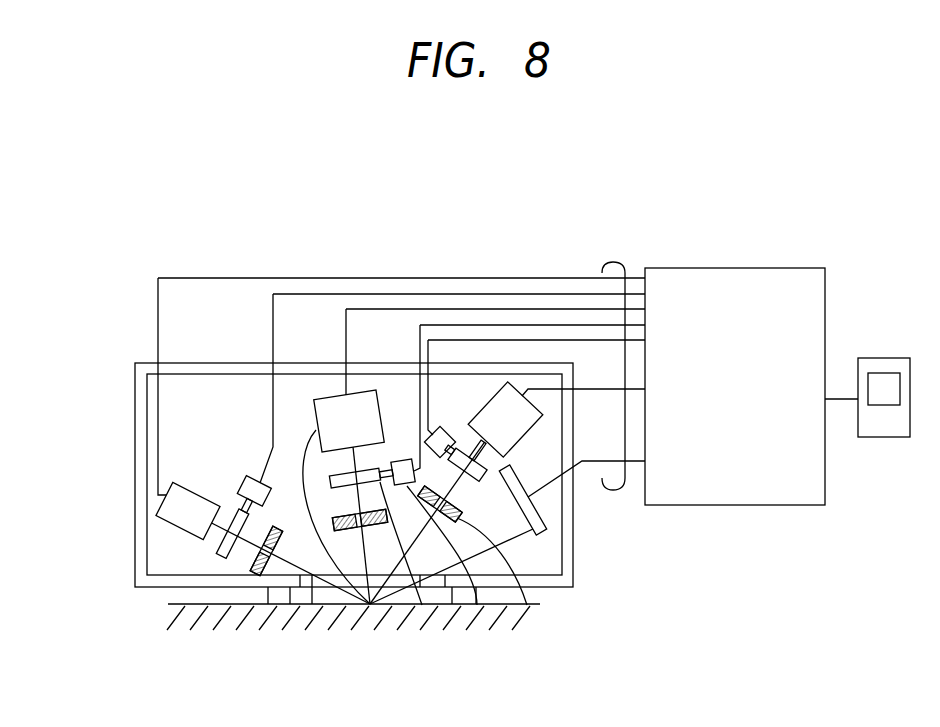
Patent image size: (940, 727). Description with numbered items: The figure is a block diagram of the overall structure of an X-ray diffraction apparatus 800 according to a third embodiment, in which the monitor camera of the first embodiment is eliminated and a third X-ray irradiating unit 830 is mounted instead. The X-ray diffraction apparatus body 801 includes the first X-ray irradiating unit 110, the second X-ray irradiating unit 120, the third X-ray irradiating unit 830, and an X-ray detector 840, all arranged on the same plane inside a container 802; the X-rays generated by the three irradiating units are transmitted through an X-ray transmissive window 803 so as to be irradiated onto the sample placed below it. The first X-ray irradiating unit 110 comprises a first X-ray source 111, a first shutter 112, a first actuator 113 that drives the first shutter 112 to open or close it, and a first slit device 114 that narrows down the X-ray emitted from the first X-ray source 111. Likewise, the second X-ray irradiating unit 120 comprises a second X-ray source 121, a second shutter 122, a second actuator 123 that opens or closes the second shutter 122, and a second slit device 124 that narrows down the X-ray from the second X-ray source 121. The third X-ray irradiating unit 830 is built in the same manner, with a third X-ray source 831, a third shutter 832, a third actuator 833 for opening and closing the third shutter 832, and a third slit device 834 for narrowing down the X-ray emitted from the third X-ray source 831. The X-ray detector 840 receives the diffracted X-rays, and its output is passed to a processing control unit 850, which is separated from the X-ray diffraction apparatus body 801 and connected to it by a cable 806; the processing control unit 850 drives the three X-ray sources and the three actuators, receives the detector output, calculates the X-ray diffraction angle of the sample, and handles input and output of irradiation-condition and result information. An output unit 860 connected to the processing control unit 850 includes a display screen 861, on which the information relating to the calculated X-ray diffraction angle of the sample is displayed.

The X-ray diffraction apparatus 800 is at (478, 127).
The X-ray diffraction apparatus body 801 is at (87, 686).
The container 802 is at (640, 578).
The X-ray transmissive window 803 is at (318, 652).
The cable 806 is at (613, 262).
The first X-ray irradiating unit 110 is at (231, 563).
The first X-ray source 111 is at (130, 652).
The first shutter 112 is at (192, 652).
The first actuator 113 is at (248, 476).
The first slit device 114 is at (257, 603).
The second X-ray irradiating unit 120 is at (430, 389).
The second X-ray source 121 is at (509, 381).
The second shutter 122 is at (458, 452).
The second actuator 123 is at (442, 427).
The second slit device 124 is at (460, 508).
The third X-ray irradiating unit 830 is at (464, 604).
The third X-ray source 831 is at (378, 652).
The third shutter 832 is at (488, 652).
The third actuator 833 is at (509, 599).
The third slit device 834 is at (436, 652).
The X-ray detector 840 is at (633, 529).
The processing control unit 850 is at (735, 268).
The output unit 860 is at (885, 358).
The display screen 861 is at (885, 465).